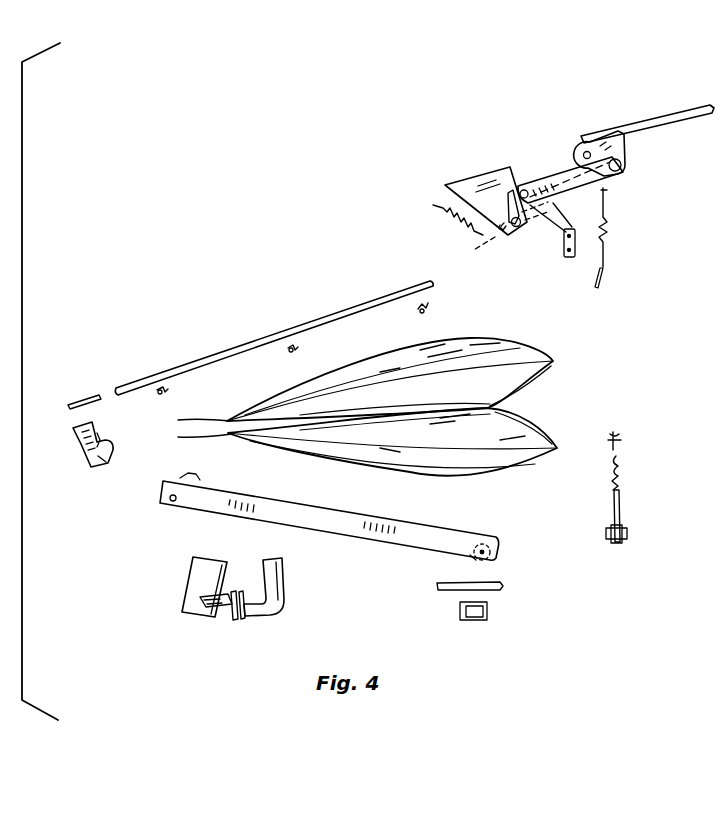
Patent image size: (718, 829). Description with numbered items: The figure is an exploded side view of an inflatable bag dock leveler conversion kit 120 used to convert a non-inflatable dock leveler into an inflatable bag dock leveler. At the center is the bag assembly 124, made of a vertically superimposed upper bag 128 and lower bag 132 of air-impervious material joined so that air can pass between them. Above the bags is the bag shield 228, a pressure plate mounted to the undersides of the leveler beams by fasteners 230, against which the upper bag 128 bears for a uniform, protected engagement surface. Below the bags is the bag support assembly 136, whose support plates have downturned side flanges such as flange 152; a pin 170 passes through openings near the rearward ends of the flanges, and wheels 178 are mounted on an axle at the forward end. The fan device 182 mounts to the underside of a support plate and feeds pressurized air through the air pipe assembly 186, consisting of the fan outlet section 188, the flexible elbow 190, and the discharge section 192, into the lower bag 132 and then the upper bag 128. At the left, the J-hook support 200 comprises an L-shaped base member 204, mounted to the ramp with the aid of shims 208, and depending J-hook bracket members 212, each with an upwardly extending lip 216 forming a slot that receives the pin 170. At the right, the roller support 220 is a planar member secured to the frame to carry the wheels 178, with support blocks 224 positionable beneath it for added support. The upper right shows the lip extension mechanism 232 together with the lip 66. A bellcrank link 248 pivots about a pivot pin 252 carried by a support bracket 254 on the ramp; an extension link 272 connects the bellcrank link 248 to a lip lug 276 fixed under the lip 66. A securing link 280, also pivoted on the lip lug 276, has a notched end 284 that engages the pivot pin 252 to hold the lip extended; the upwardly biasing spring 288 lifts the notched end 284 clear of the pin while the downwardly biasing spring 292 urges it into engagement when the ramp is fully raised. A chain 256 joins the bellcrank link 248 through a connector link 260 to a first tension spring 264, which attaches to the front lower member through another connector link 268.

The inflatable bag dock leveler conversion kit 120 is at (158, 207).
The lip 66 is at (678, 114).
The lip extension mechanism 232 is at (533, 106).
The lip lug 276 is at (626, 150).
The extension link 272 is at (566, 180).
The bellcrank link 248 is at (553, 228).
The pivot pin 252 is at (520, 232).
The support bracket 254 is at (480, 178).
The upwardly biasing spring 288 is at (434, 205).
The notched end 284 is at (469, 243).
The securing link 280 is at (577, 207).
The downwardly biasing spring 292 is at (608, 232).
The connector link 260 is at (577, 248).
The bag shield 228 is at (247, 343).
The shims 208 is at (96, 393).
The fasteners 230 is at (167, 390).
The J-hook support 200 is at (73, 455).
The L-shaped base member 204 is at (72, 428).
The upwardly extending lip 216 is at (99, 437).
The J-hook bracket members 212 is at (115, 462).
The bag assembly 124 is at (520, 400).
The upper bag 128 is at (520, 350).
The lower bag 132 is at (491, 455).
The bag support assembly 136 is at (312, 496).
The pin 170 is at (168, 509).
The downturned side flange 152 is at (418, 522).
The wheels 178 is at (476, 559).
The air pipe assembly 186 is at (238, 632).
The fan device 182 is at (192, 572).
The fan outlet section 188 is at (212, 606).
The flexible elbow 190 is at (268, 608).
The discharge section 192 is at (281, 566).
The roller support 220 is at (503, 588).
The support blocks 224 is at (487, 618).
The chain 256 is at (645, 414).
The first tension spring 264 is at (610, 477).
The connector link 268 is at (616, 504).